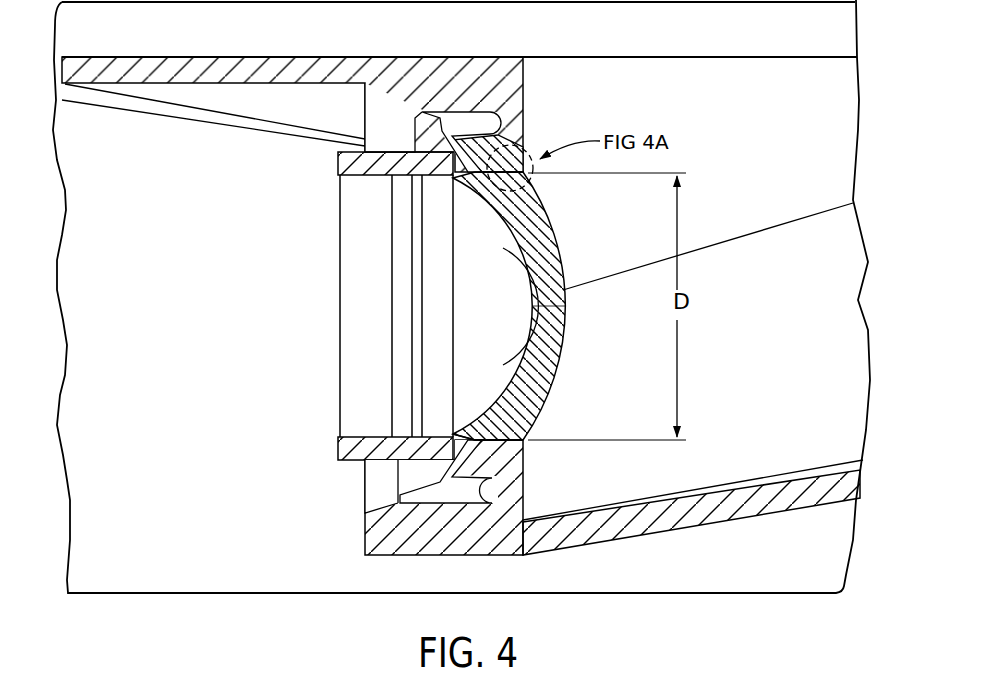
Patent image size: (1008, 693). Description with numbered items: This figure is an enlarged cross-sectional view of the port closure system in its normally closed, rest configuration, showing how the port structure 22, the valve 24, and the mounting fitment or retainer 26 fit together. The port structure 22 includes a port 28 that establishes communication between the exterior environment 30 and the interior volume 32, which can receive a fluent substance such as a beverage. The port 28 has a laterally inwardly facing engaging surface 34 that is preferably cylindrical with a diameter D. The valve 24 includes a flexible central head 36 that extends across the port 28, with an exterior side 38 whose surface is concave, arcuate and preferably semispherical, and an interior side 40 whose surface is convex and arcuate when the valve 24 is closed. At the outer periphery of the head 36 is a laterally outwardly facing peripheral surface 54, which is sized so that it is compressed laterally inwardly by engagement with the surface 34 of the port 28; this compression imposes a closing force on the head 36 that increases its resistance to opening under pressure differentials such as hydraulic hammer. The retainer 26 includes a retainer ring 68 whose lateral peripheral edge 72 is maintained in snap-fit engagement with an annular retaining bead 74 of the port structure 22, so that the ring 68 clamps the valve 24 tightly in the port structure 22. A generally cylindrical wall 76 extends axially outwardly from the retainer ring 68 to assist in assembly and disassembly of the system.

The port structure 22 is at (362, 489).
The valve 24 is at (450, 198).
The mounting fitment or retainer 26 is at (332, 296).
The port 28 is at (538, 177).
The exterior environment 30 is at (133, 572).
The interior volume 32 is at (824, 133).
The laterally inwardly facing engaging surface 34 is at (526, 437).
The head 36 is at (540, 222).
The exterior side 38 is at (468, 420).
The interior side 40 is at (564, 318).
The laterally outwardly facing peripheral surface 54 is at (492, 453).
The retainer ring 68 is at (434, 103).
The lateral peripheral edge 72 is at (423, 503).
The annular retaining bead 74 is at (370, 117).
The generally cylindrical wall 76 is at (348, 443).